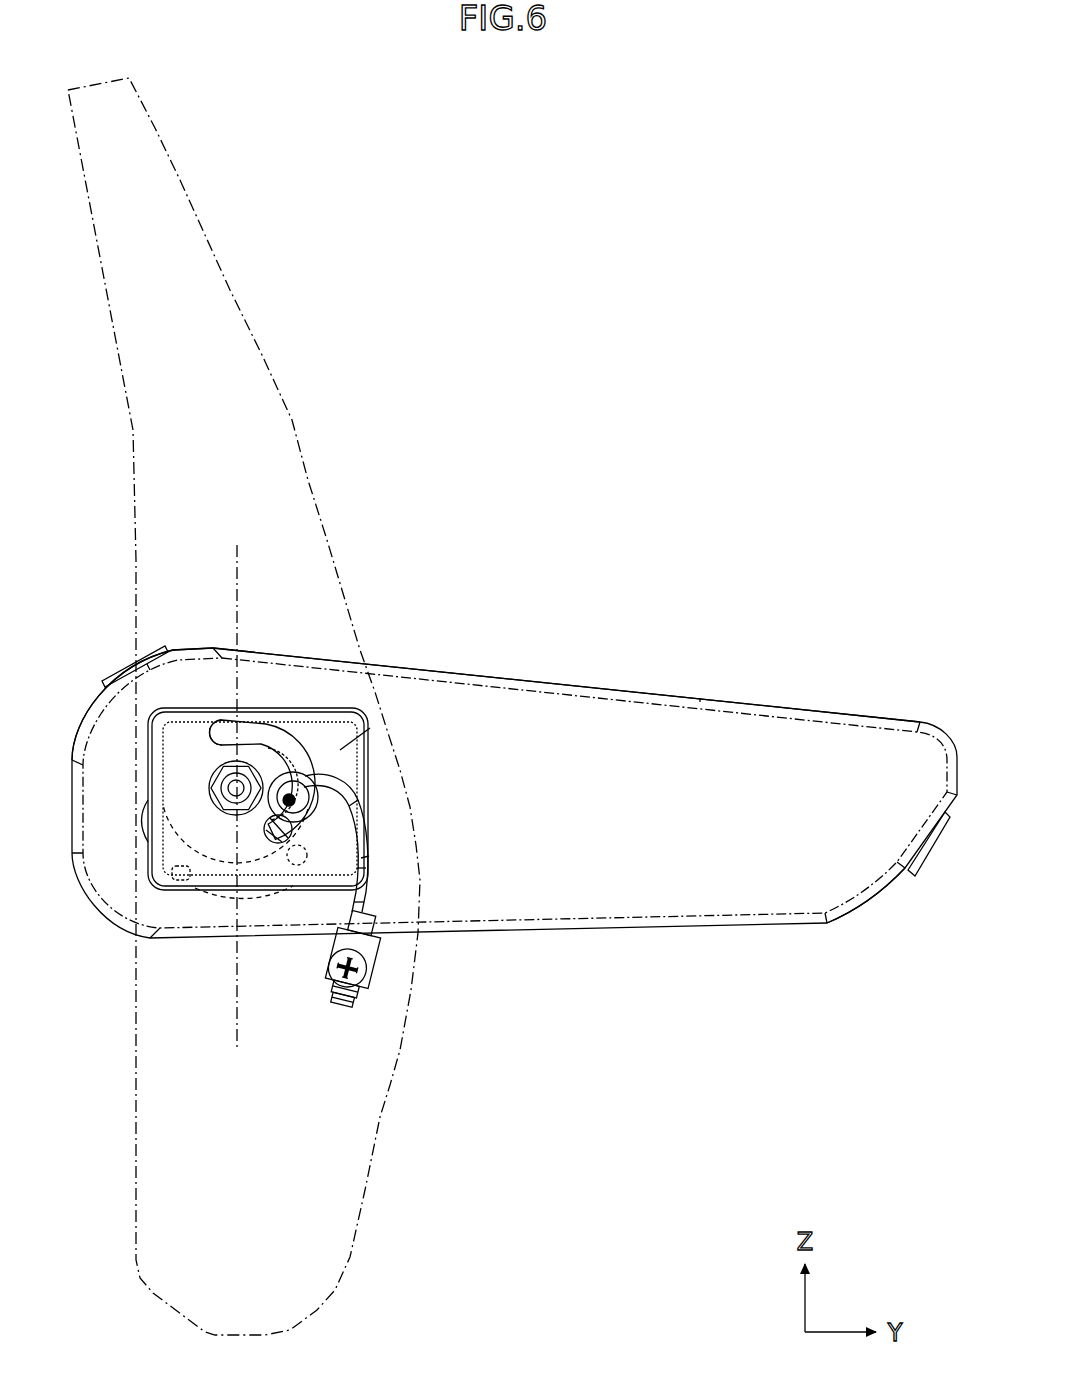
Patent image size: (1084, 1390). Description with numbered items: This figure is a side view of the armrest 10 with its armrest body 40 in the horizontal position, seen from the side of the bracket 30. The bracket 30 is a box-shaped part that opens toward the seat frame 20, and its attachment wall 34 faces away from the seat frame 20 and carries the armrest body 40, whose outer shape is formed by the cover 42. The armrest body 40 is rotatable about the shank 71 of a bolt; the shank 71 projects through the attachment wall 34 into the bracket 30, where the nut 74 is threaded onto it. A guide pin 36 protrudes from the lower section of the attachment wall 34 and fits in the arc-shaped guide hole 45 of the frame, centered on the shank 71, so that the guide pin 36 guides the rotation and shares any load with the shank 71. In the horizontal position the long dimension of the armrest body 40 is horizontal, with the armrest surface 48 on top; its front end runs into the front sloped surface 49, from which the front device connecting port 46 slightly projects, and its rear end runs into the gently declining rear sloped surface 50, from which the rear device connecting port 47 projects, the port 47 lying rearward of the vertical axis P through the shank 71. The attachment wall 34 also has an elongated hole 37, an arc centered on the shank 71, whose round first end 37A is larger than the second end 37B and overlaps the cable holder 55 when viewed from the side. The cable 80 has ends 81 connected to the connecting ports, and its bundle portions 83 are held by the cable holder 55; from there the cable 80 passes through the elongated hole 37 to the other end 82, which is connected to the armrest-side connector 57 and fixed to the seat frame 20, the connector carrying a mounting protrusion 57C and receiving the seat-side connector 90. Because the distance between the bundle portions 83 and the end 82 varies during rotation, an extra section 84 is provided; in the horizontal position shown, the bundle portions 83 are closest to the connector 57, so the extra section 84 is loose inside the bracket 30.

The armrest 10 is at (470, 521).
The seat frame 20 is at (242, 280).
The bracket 30 is at (366, 694).
The attachment wall 34 is at (325, 735).
The guide pin 36 is at (281, 882).
The elongated hole 37 is at (273, 743).
The first end 37A is at (283, 870).
The second end 37B is at (232, 717).
The armrest body 40 is at (549, 667).
The cover 42 is at (707, 757).
The guide hole 45 is at (187, 888).
The front device connecting port 46 is at (935, 848).
The rear device connecting port 47 is at (118, 673).
The armrest surface 48 is at (634, 696).
The front sloped surface 49 is at (905, 871).
The rear sloped surface 50 is at (177, 650).
The cable holder 55 is at (318, 797).
The armrest-side connector 57 is at (387, 950).
The mounting protrusion 57C is at (356, 975).
The shank 71 is at (228, 783).
The nut 74 is at (217, 793).
The cable 80 is at (375, 847).
The end 81 is at (370, 728).
The end 82 is at (377, 902).
The bundle portions 83 is at (368, 867).
The extra section 84 is at (314, 779).
The seat-side connector 90 is at (347, 1030).
The vertical axis P is at (235, 1043).